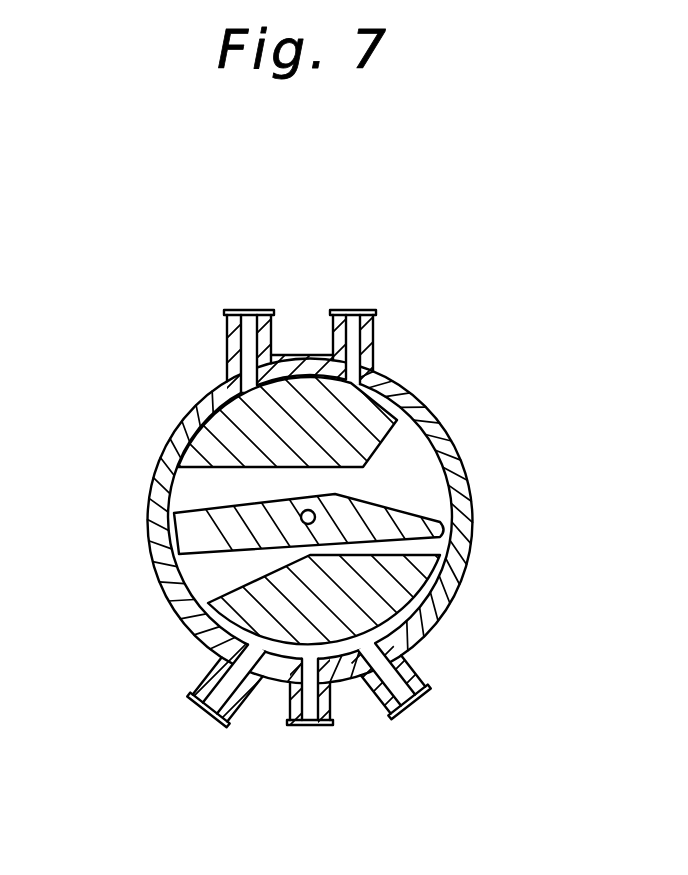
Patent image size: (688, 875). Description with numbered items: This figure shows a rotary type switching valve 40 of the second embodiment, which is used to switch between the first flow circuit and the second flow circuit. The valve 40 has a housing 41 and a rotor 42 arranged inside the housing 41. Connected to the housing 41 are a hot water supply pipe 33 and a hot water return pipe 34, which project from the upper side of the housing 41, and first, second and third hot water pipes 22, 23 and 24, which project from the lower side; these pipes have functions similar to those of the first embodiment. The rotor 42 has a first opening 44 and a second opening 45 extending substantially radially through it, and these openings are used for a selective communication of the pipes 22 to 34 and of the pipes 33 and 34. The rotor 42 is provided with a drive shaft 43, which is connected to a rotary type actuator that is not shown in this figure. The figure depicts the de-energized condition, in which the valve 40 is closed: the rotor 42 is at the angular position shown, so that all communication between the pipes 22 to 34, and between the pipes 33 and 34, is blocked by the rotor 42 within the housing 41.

The switching valve 40 is at (481, 463).
The housing 41 is at (150, 512).
The rotor 42 is at (348, 422).
The drive shaft 43 is at (170, 548).
The first opening 44 is at (197, 487).
The second opening 45 is at (205, 575).
The hot water supply pipe 33 is at (371, 341).
The hot water return pipe 34 is at (230, 352).
The first hot water pipe 22 is at (417, 684).
The second hot water pipe 23 is at (330, 707).
The third hot water pipe 24 is at (232, 708).